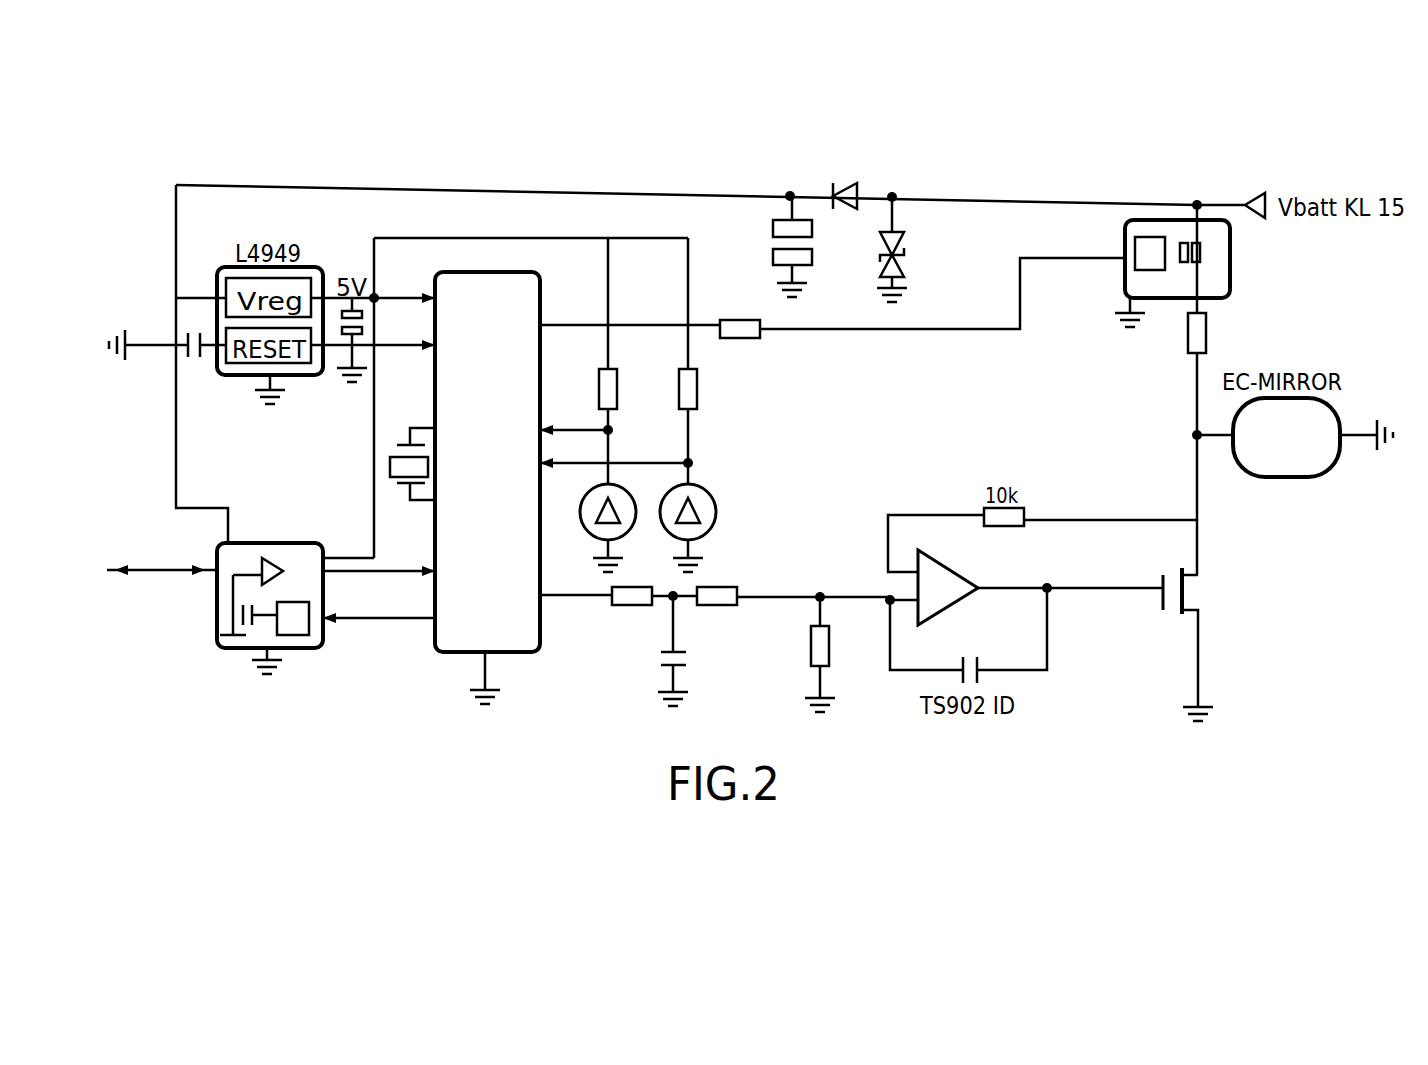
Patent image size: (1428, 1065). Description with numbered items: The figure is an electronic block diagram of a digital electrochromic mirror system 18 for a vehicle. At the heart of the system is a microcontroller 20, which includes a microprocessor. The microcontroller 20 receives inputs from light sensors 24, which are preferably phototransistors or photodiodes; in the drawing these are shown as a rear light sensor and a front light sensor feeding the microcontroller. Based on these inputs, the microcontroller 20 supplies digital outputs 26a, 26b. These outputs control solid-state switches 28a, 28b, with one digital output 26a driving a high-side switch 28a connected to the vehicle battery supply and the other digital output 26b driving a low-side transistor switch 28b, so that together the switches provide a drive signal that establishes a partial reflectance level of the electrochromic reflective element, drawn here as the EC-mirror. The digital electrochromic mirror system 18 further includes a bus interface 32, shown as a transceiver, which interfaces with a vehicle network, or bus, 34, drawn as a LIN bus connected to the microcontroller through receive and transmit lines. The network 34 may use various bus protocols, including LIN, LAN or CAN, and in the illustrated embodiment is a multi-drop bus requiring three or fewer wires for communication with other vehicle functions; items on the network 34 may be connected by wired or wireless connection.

The digital electrochromic mirror system 18 is at (874, 407).
The microcontroller 20 is at (490, 272).
The light sensors 24 is at (682, 440).
The digital output 26a is at (542, 322).
The digital output 26b is at (543, 600).
The solid-state switch 28a is at (1222, 298).
The solid-state switch 28b is at (1200, 605).
The bus interface 32 is at (300, 650).
The vehicle network, or bus 34 is at (160, 568).